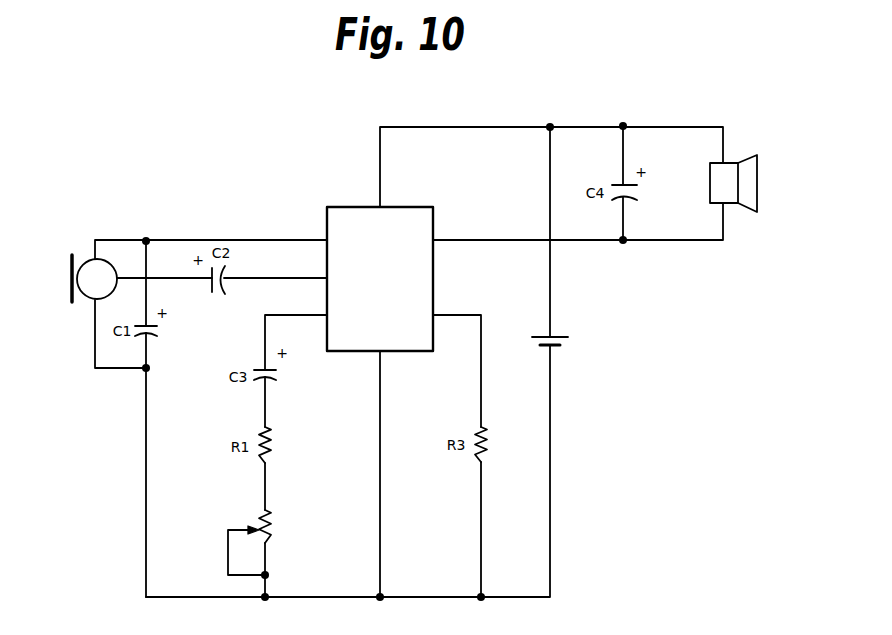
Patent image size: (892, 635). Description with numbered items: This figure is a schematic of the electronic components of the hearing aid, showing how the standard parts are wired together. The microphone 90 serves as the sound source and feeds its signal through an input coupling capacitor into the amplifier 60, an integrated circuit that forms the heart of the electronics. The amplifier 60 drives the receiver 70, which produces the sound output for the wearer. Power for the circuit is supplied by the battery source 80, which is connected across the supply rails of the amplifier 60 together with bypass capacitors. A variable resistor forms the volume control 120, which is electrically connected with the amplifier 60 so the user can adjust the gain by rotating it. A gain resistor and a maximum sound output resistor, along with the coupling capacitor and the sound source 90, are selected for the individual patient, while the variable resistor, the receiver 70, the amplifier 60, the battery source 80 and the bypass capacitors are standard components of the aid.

The amplifier 60 is at (368, 320).
The receiver 70 is at (728, 162).
The battery source 80 is at (578, 355).
The microphone 90 is at (83, 323).
The volume control 120 is at (280, 537).